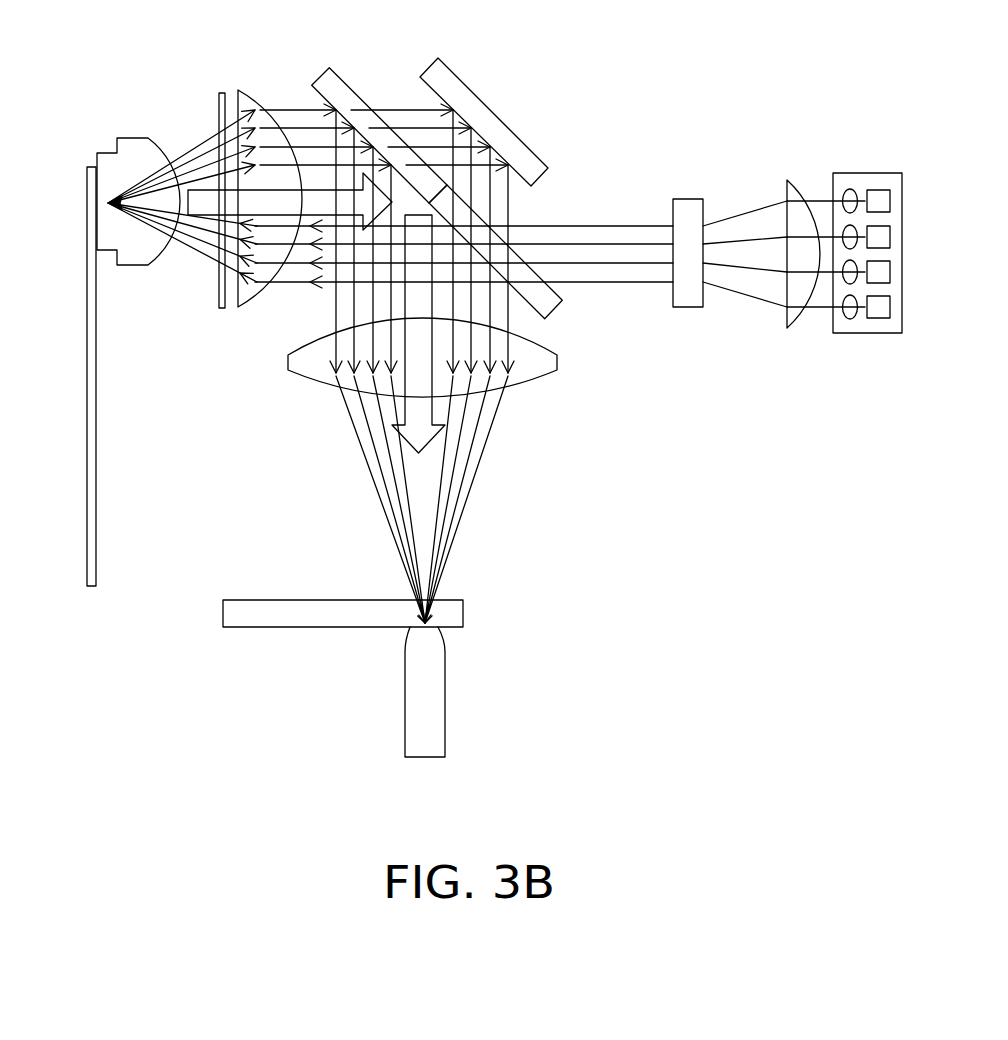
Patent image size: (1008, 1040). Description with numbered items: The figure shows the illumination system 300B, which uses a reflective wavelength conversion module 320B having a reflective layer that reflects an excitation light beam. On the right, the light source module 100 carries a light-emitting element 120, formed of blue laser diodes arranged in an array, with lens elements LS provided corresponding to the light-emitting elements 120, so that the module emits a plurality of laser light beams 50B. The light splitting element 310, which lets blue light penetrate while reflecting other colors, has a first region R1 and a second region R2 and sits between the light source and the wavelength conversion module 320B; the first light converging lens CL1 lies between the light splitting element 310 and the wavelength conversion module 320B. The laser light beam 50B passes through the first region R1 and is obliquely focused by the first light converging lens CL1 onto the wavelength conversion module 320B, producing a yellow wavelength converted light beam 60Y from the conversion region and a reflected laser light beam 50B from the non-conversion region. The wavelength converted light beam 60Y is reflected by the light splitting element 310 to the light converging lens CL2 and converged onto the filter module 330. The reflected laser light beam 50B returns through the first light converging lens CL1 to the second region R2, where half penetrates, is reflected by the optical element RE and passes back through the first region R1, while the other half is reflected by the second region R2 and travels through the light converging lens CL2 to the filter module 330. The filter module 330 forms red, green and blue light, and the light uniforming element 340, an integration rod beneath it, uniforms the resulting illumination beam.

The wavelength conversion module 320B is at (90, 400).
The first light converging lens CL1 is at (252, 93).
The laser light beam 50B is at (303, 128).
The second region R2 is at (334, 92).
The first region R1 is at (552, 300).
The optical element RE is at (445, 82).
The light splitting element 310 is at (565, 318).
The light source module 100 is at (832, 140).
The lens element LS is at (850, 193).
The light-emitting element 120 is at (877, 197).
The wavelength converted light beam 60Y is at (318, 207).
The light converging lens CL2 is at (532, 363).
The filter module 330 is at (280, 607).
The light uniforming element 340 is at (435, 697).
The illumination system 300B is at (872, 743).